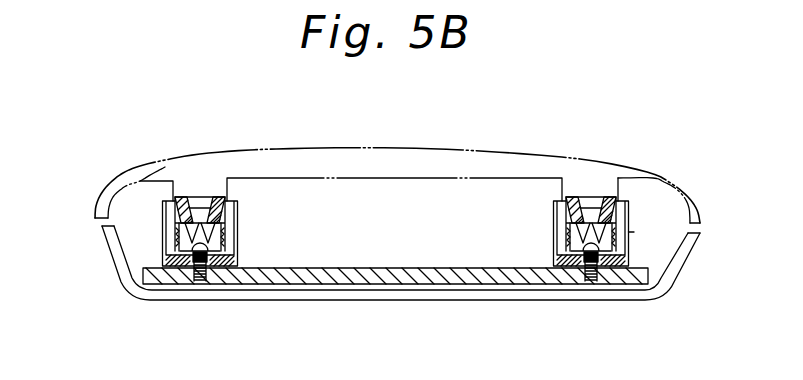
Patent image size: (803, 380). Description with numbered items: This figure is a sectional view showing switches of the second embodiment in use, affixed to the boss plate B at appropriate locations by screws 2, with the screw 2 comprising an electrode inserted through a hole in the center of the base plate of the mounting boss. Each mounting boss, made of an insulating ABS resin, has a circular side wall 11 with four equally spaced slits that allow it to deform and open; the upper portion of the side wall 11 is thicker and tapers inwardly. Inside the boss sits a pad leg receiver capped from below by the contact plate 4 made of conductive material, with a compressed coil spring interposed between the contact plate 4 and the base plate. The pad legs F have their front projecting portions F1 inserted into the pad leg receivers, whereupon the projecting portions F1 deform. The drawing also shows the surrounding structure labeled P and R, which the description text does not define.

The outer casing panel P is at (520, 155).
The bottom cover R is at (538, 299).
The boss plate B is at (272, 275).
The circular side wall 11 is at (163, 218).
The pad leg F is at (208, 203).
The front projecting portion F1 is at (197, 197).
The contact plate 4 is at (224, 230).
The screw 2 is at (190, 279).